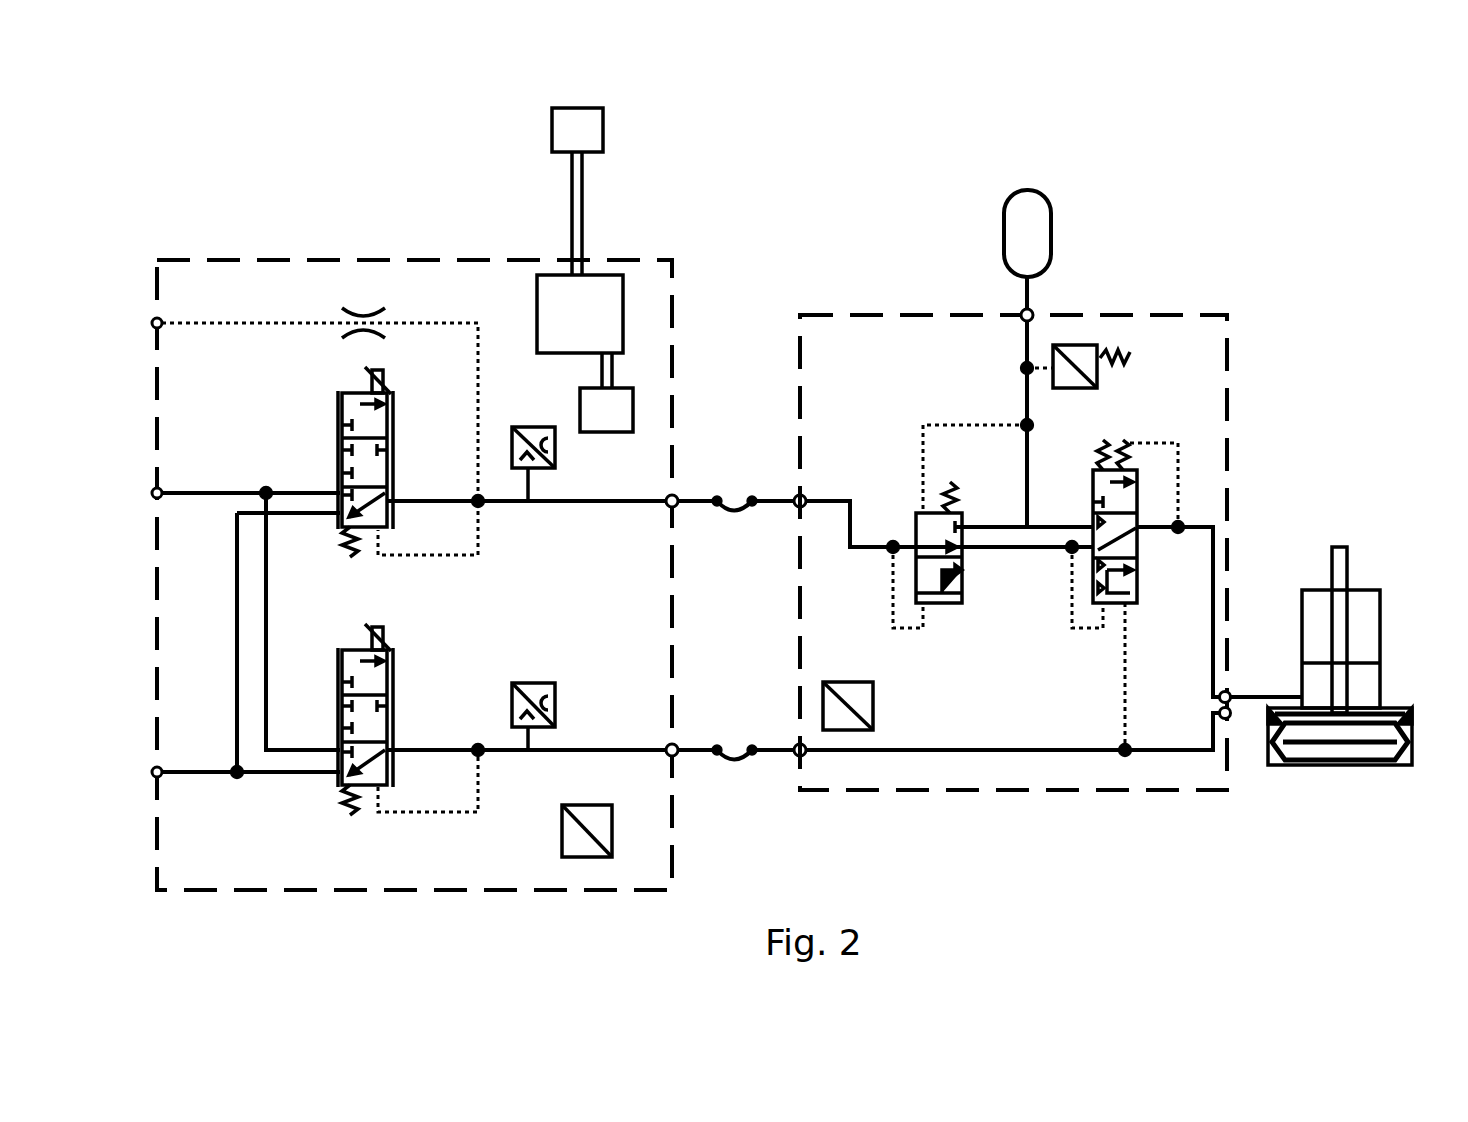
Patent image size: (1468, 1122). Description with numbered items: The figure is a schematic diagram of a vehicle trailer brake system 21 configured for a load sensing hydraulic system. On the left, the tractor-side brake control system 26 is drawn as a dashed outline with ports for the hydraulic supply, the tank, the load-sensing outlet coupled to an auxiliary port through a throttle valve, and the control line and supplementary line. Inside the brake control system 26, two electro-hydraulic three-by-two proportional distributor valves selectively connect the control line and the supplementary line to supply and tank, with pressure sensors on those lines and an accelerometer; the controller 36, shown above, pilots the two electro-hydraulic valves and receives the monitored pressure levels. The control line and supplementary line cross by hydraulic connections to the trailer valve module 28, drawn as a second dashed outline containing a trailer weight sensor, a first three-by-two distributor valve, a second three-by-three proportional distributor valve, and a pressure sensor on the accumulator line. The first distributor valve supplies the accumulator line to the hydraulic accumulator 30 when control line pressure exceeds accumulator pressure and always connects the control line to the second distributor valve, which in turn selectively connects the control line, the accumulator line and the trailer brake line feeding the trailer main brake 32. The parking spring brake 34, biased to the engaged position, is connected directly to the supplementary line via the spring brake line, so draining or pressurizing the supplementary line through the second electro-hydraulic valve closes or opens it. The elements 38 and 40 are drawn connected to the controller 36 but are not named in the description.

The vehicle trailer brake system 21 is at (293, 143).
The brake control system 26 is at (290, 258).
The trailer valve module 28 is at (925, 315).
The hydraulic accumulator 30 is at (1025, 192).
The trailer main brake 32 is at (1362, 590).
The parking spring brake 34 is at (1300, 766).
The controller 36 is at (548, 270).
The operator interface 38 is at (572, 108).
The sensor / indicator unit 40 is at (622, 412).